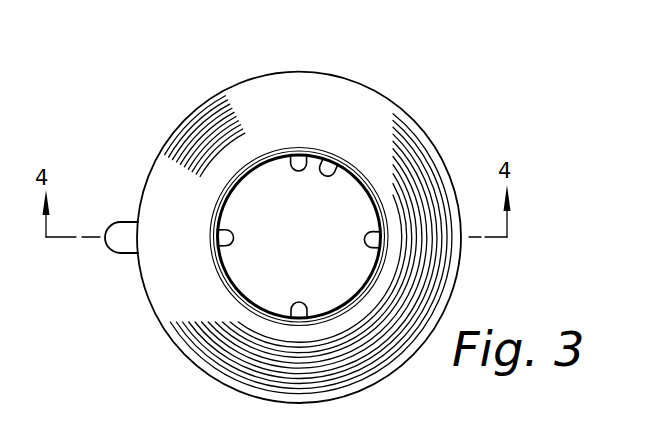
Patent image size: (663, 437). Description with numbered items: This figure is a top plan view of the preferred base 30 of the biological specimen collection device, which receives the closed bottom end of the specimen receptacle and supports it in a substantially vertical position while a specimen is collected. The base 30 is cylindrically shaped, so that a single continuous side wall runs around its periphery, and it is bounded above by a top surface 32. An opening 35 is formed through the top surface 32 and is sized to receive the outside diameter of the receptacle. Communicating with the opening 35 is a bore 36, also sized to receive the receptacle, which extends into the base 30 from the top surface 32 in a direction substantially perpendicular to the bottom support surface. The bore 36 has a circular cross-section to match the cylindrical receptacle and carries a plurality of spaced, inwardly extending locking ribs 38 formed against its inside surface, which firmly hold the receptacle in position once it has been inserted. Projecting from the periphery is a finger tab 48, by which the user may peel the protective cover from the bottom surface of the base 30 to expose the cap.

The base 30 is at (303, 54).
The top surface 32 is at (357, 158).
The opening 35 is at (238, 266).
The bore 36 is at (318, 162).
The locking ribs 38 is at (293, 168).
The finger tab 48 is at (116, 227).